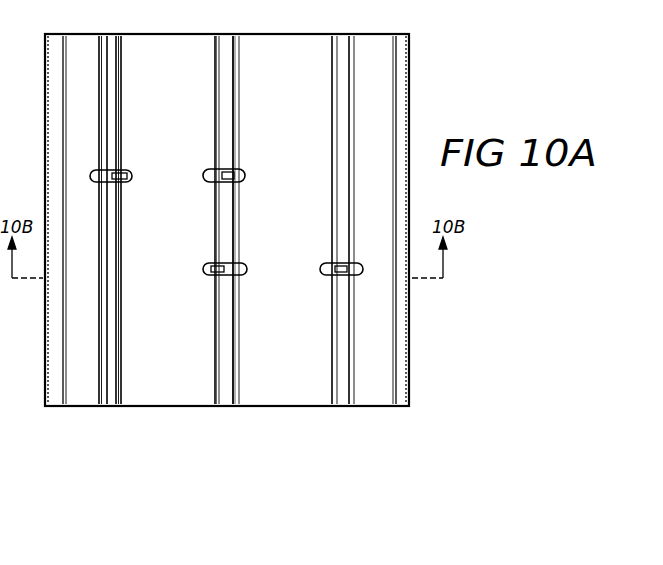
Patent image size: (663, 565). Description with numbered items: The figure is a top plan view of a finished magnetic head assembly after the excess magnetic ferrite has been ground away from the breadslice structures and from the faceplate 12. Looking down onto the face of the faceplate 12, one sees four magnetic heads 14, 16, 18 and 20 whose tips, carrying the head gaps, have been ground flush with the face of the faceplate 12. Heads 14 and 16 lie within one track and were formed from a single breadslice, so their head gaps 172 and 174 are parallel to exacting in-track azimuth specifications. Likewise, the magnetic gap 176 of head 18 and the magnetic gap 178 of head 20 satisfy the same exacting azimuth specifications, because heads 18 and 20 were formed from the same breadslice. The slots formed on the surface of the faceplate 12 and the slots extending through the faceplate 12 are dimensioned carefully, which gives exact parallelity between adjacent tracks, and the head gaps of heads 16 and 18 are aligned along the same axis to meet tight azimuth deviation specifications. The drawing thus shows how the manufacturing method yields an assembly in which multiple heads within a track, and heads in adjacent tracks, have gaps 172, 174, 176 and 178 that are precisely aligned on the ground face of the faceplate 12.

The faceplate 12 is at (148, 398).
The magnetic head 14 is at (128, 182).
The magnetic head 16 is at (243, 169).
The magnetic head 18 is at (208, 263).
The magnetic head 20 is at (327, 263).
The head gap 172 is at (125, 172).
The head gap 174 is at (238, 182).
The magnetic gap 176 is at (218, 275).
The magnetic gap 178 is at (333, 275).